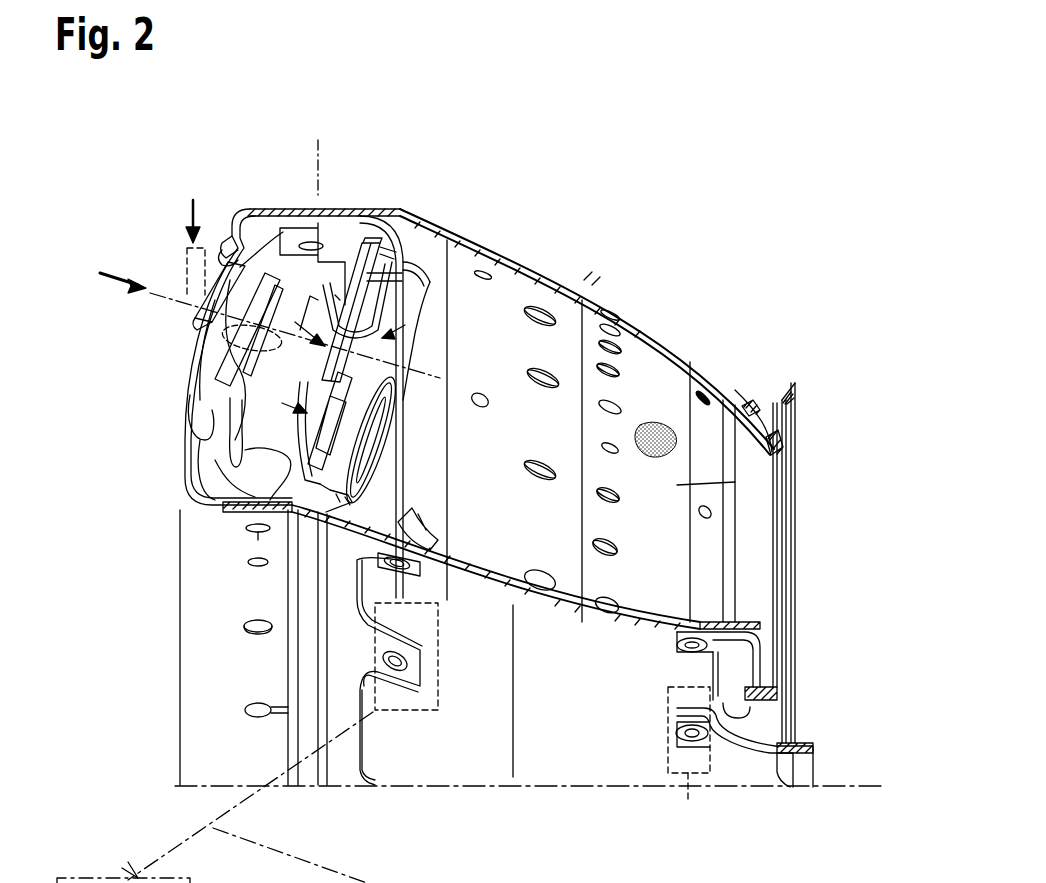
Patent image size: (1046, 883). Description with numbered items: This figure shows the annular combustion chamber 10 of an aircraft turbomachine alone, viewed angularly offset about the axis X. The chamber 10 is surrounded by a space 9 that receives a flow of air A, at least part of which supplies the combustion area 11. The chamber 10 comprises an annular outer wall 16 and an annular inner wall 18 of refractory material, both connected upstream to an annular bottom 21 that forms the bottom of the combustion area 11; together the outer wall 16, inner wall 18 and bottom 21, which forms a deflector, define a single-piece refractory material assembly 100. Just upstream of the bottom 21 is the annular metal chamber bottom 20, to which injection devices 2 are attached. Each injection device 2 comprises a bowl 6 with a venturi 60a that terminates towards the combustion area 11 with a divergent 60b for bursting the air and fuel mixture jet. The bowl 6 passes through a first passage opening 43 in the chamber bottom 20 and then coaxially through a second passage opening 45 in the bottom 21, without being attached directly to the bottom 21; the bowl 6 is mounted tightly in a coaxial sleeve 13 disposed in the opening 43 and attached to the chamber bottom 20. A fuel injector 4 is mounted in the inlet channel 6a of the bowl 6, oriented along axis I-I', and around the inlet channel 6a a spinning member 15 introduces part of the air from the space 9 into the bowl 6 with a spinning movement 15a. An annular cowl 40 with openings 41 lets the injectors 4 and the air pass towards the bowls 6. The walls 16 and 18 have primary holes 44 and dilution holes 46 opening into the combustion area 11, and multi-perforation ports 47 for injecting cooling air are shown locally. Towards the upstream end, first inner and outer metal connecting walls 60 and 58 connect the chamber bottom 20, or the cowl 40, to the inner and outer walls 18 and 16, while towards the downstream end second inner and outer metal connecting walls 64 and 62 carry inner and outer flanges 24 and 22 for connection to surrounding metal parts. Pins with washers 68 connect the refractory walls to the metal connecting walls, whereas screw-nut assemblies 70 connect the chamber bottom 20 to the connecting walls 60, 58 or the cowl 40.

The injection device 2 is at (405, 453).
The fuel injector 4 is at (220, 333).
The bowl 6 is at (405, 345).
The inlet channel 6a is at (225, 392).
The space 9 is at (266, 309).
The combustion chamber 10 is at (672, 300).
The combustion area 11 is at (740, 482).
The sleeve 13 is at (436, 266).
The spinning member 15 is at (258, 243).
The spinning movement arrow 15a is at (240, 445).
The outer annular wall 16 is at (497, 296).
The inner annular wall 18 is at (607, 750).
The chamber bottom 20 is at (358, 210).
The bottom 21 is at (408, 232).
The outer flange 22 is at (796, 419).
The inner flange 24 is at (777, 695).
The annular cowl 40 is at (296, 207).
The opening 41 is at (221, 203).
The first passage opening 43 is at (410, 290).
The primary hole 44 is at (540, 312).
The second passage opening 45 is at (395, 430).
The dilution hole 46 is at (618, 376).
The multi-perforation port 47 is at (677, 485).
The first outer annular metal connecting wall 58 is at (420, 240).
The first inner annular metal connecting wall 60 is at (352, 645).
The venturi 60a is at (398, 392).
The divergent 60b is at (385, 487).
The second outer metal connecting wall 62 is at (749, 404).
The second inner metal connecting wall 64 is at (740, 668).
The washer 68 is at (677, 642).
The screw-nut assembly 70 is at (324, 200).
The single-piece refractory material assembly 100 is at (756, 372).